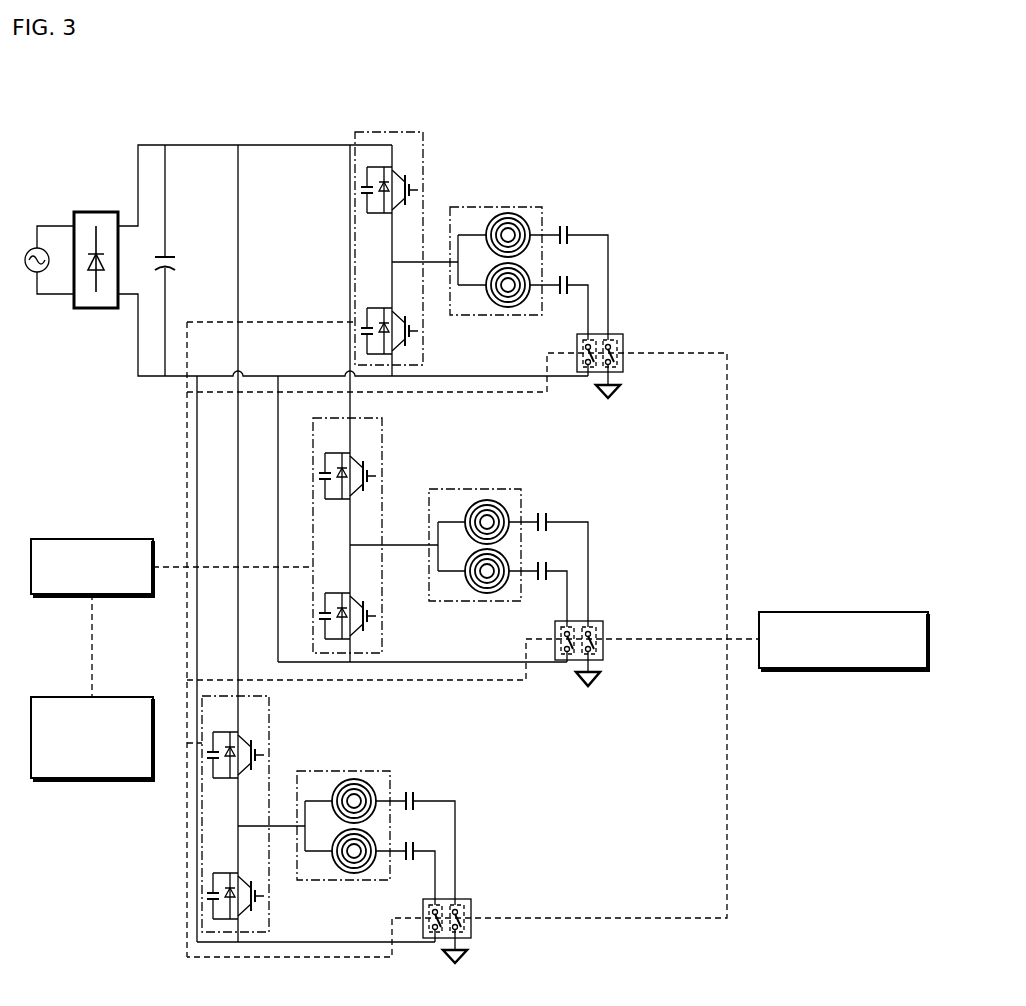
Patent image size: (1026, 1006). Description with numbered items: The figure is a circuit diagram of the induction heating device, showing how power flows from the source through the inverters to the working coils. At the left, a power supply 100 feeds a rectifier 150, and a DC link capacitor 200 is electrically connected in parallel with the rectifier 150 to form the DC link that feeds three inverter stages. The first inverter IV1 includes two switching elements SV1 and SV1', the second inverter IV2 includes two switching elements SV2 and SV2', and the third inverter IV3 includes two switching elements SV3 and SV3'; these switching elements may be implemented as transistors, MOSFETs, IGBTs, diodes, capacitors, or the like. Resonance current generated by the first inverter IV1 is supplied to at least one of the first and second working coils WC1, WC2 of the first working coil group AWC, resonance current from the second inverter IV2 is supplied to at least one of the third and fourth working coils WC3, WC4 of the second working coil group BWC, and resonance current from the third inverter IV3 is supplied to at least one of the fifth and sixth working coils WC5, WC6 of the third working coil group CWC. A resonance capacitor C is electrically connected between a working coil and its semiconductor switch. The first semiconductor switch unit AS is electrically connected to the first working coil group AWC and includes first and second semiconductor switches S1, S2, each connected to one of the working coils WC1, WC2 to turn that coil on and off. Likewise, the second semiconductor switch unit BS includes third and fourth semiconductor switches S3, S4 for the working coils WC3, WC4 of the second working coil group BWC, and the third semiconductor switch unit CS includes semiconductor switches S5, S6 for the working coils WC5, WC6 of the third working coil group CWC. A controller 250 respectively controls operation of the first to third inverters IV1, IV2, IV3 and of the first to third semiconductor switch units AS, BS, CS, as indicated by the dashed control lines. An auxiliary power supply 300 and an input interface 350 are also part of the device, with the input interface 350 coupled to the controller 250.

The power supply 100 is at (40, 247).
The rectifier 150 is at (96, 212).
The DC link capacitor 200 is at (170, 255).
The controller 250 is at (92, 539).
The auxiliary power supply 300 is at (842, 612).
The input interface 350 is at (92, 778).
The first inverter IV1 is at (393, 132).
The second inverter IV2 is at (383, 442).
The third inverter IV3 is at (271, 712).
The switching element SV1 is at (355, 192).
The switching element SV1' is at (354, 335).
The switching element SV2 is at (258, 487).
The switching element SV2' is at (257, 627).
The switching element SV3 is at (204, 768).
The switching element SV3' is at (201, 897).
The first working coil group AWC is at (496, 207).
The second working coil group BWC is at (475, 489).
The third working coil group CWC is at (342, 771).
The first working coil WC1 is at (527, 226).
The second working coil WC2 is at (527, 277).
The third working coil WC3 is at (506, 512).
The fourth working coil WC4 is at (506, 564).
The fifth working coil WC5 is at (373, 791).
The sixth working coil WC6 is at (373, 843).
The resonance capacitor C is at (568, 232).
The first semiconductor switch S1 is at (612, 340).
The second semiconductor switch S2 is at (592, 340).
The third semiconductor switch S3 is at (591, 627).
The fourth semiconductor switch S4 is at (571, 627).
The semiconductor switch S5 is at (459, 905).
The semiconductor switch S6 is at (439, 905).
The first semiconductor switch unit AS is at (624, 346).
The second semiconductor switch unit BS is at (602, 633).
The third semiconductor switch unit CS is at (470, 912).